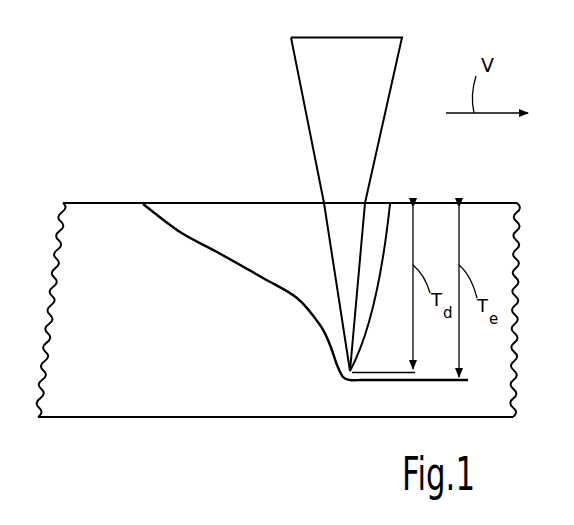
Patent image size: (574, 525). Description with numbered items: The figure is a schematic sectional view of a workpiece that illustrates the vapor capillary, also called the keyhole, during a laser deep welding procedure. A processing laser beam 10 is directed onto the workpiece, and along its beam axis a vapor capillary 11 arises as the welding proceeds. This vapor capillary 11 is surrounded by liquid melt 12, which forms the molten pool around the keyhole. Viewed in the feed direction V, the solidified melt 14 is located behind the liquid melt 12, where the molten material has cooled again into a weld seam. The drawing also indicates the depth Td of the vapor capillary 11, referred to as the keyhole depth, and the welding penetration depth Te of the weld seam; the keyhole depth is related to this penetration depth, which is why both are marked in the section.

The processing laser beam 10 is at (357, 90).
The vapor capillary 11 is at (345, 242).
The liquid melt 12 is at (248, 232).
The solidified melt 14 is at (125, 245).